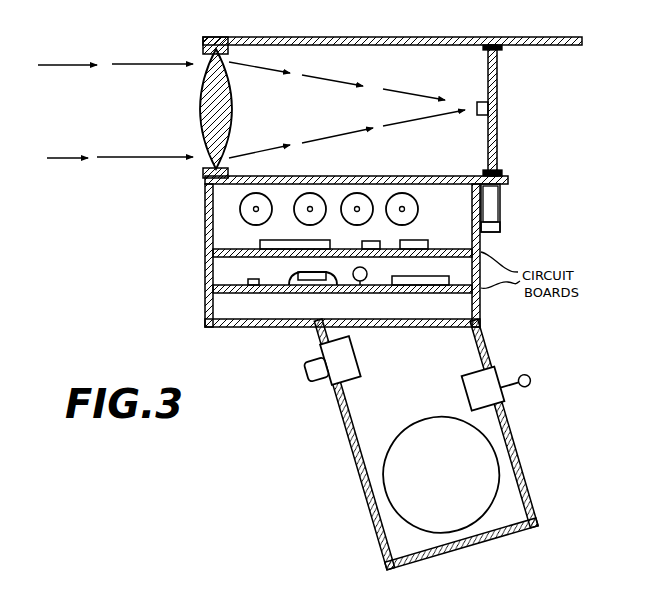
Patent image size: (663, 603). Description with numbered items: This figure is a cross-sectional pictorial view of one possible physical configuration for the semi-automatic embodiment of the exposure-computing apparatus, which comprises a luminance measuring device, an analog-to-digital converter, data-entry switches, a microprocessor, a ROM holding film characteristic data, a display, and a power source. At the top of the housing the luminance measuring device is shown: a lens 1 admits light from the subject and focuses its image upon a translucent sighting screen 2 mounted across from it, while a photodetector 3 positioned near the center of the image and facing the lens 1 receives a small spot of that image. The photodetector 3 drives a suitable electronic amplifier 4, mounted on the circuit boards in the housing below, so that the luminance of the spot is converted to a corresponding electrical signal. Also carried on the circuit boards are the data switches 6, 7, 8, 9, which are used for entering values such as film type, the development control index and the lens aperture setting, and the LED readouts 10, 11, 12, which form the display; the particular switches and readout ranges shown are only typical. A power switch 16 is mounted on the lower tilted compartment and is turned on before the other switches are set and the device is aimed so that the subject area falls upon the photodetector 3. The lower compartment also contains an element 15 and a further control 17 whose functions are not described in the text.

The lens 1 is at (208, 68).
The translucent sighting screen 2 is at (497, 138).
The photodetector 3 is at (489, 108).
The electronic amplifier 4 is at (298, 278).
The data switch 6 is at (258, 193).
The data switch 7 is at (311, 193).
The data switch 8 is at (357, 193).
The data switch 9 is at (402, 193).
The LED readout 10 is at (494, 196).
The LED readout 11 is at (490, 204).
The LED readout 12 is at (490, 227).
The battery 15 is at (486, 474).
The power switch 16 is at (503, 389).
The switch 17 is at (320, 357).